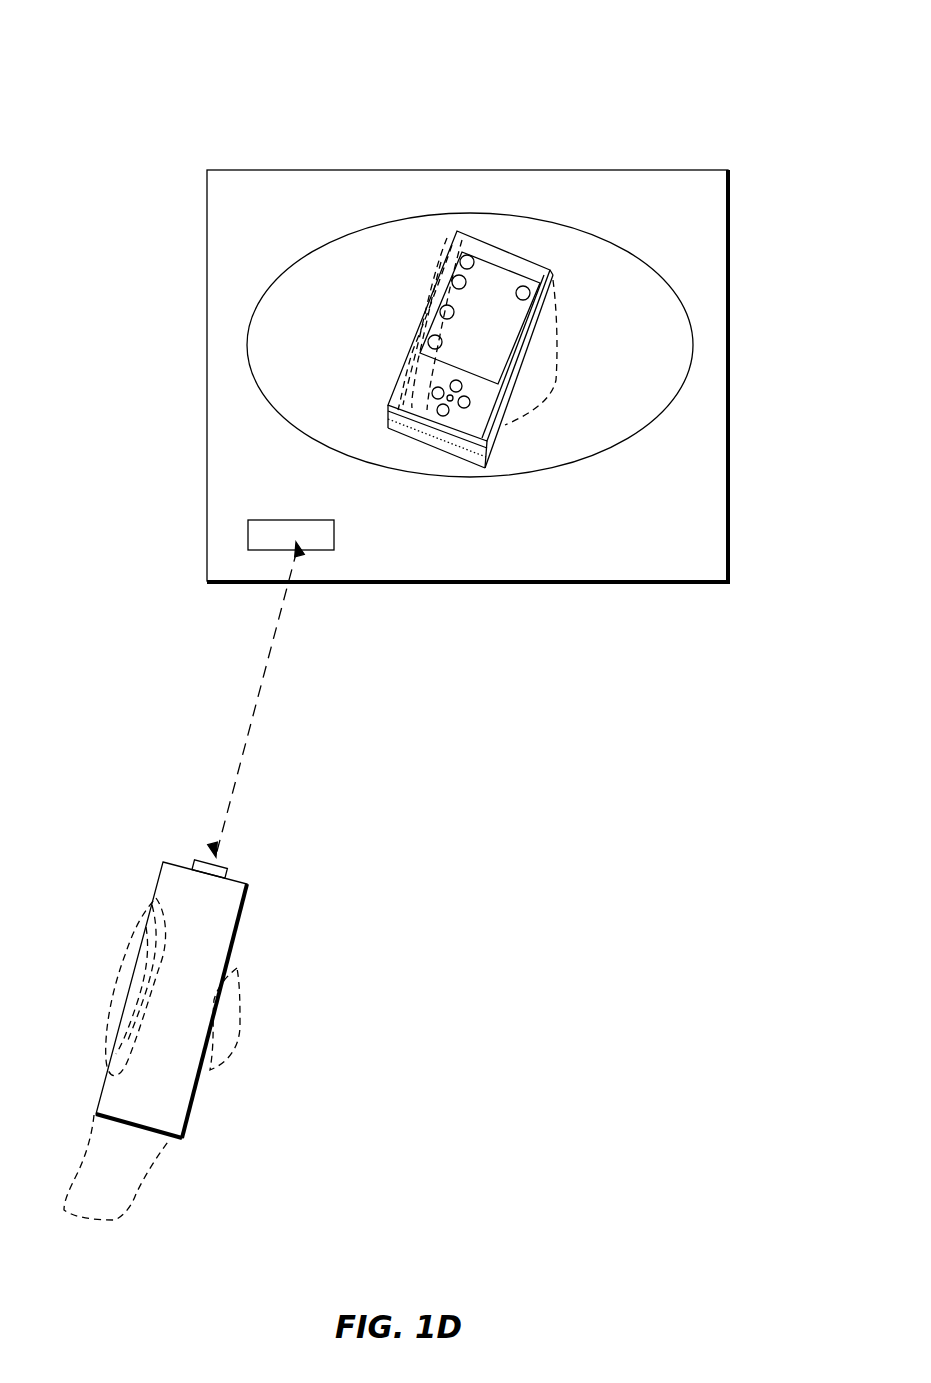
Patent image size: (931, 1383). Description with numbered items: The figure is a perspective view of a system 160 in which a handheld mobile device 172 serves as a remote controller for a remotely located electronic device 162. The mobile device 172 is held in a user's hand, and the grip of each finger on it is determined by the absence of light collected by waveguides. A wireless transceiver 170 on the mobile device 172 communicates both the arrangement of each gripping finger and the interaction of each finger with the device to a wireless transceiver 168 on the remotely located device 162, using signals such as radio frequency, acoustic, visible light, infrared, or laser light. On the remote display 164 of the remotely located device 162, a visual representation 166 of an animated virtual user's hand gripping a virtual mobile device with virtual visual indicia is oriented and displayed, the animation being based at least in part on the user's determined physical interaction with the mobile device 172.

The system 160 is at (530, 80).
The remotely located electronic device 162 is at (728, 585).
The remote display 164 is at (620, 445).
The visual representation 166 is at (504, 421).
The wireless transceiver 168 is at (334, 550).
The wireless transceiver 170 is at (231, 874).
The mobile device 172 is at (190, 1124).